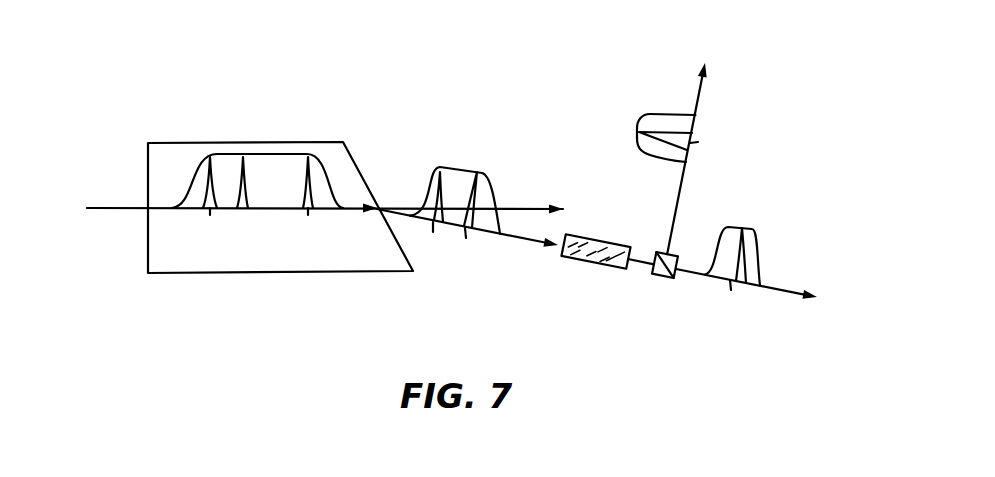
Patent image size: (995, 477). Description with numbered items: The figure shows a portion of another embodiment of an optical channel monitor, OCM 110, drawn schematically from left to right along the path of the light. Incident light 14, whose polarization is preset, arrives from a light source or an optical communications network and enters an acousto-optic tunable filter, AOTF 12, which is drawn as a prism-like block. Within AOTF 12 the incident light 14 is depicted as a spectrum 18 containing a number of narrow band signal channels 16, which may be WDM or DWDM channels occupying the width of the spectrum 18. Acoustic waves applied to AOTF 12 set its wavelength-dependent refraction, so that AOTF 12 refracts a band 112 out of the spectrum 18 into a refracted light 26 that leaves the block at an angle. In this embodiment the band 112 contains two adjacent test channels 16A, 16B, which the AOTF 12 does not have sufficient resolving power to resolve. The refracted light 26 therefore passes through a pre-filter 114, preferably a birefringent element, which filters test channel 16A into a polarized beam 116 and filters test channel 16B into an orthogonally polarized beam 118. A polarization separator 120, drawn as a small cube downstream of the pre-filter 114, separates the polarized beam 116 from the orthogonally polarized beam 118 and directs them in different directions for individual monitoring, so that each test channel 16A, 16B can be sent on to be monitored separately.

The acousto-optic tunable filter 12 is at (178, 142).
The incident light 14 is at (110, 207).
The signal channels 16 is at (261, 161).
The spectrum 18 is at (323, 164).
The test channel 16A is at (450, 185).
The test channel 16B is at (480, 197).
The refracted light 26 is at (513, 238).
The optical channel monitor 110 is at (538, 57).
The band 112 is at (480, 188).
The pre-filter 114 is at (597, 233).
The polarized beam 116 is at (778, 288).
The orthogonally polarized beam 118 is at (705, 90).
The polarization separator 120 is at (675, 280).